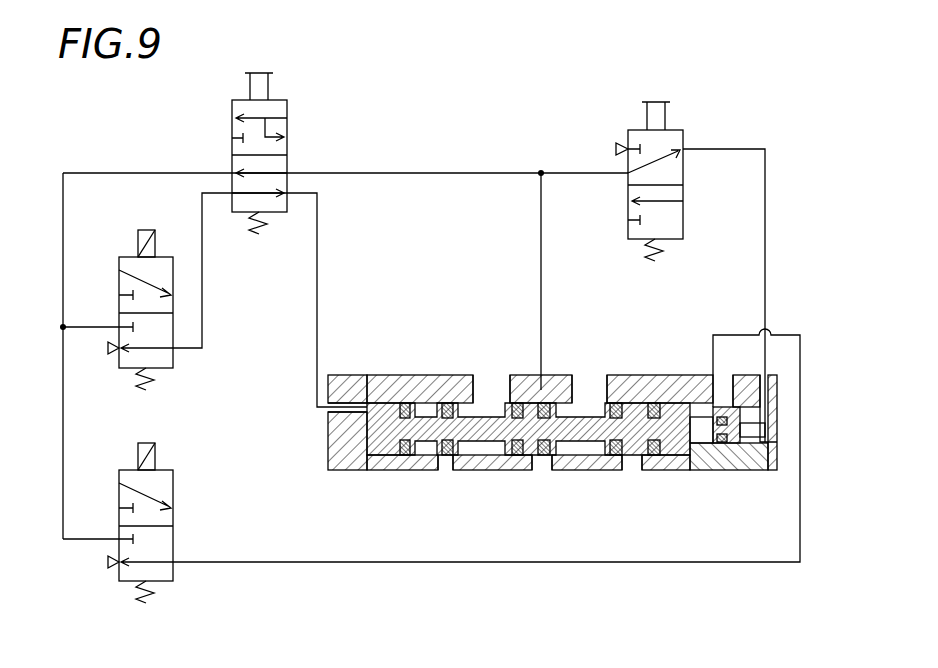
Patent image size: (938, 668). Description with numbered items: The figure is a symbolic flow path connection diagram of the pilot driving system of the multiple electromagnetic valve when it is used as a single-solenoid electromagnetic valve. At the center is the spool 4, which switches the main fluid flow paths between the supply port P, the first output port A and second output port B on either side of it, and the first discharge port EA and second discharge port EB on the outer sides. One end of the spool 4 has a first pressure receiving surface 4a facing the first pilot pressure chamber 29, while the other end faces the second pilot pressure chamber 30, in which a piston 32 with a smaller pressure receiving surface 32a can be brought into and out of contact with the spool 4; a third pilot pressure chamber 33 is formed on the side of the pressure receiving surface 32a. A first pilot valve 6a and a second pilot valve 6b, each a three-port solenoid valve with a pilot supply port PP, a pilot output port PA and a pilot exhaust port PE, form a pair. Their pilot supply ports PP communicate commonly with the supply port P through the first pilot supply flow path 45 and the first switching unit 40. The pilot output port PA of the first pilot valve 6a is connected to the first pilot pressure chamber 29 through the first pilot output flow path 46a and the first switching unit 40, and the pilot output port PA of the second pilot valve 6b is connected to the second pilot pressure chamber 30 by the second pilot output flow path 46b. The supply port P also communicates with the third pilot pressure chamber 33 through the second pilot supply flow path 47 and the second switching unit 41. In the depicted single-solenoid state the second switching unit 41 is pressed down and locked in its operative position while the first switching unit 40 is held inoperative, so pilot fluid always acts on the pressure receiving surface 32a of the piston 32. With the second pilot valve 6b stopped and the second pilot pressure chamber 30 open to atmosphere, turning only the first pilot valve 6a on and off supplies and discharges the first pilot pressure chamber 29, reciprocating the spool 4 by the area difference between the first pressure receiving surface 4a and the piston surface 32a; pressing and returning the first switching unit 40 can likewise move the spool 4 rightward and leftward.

The spool 4 is at (585, 410).
The first pressure receiving surface 4a is at (360, 452).
The first pilot valve 6a is at (128, 257).
The second pilot valve 6b is at (173, 483).
The first pilot pressure chamber 29 is at (362, 426).
The second pilot pressure chamber 30 is at (698, 470).
The piston 32 is at (737, 470).
The pressure receiving surface 32a is at (762, 442).
The third pilot pressure chamber 33 is at (753, 428).
The first switching unit 40 is at (287, 108).
The second switching unit 41 is at (675, 128).
The first pilot supply flow path 45 is at (106, 172).
The first pilot output flow path 46a is at (202, 293).
The second pilot output flow path 46b is at (320, 565).
The second pilot supply flow path 47 is at (576, 172).
The first output port A is at (490, 384).
The second output port B is at (598, 388).
The supply port P is at (540, 471).
The first discharge port EA is at (442, 471).
The second discharge port EB is at (635, 471).
The pilot supply port PP is at (118, 327).
The pilot exhaust port PE is at (112, 352).
The pilot output port PA is at (173, 348).